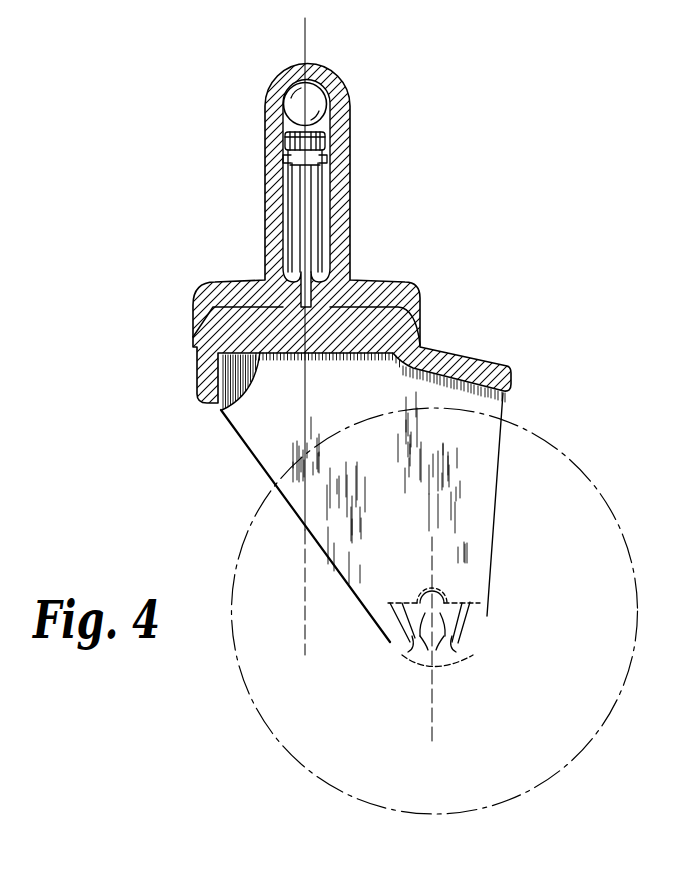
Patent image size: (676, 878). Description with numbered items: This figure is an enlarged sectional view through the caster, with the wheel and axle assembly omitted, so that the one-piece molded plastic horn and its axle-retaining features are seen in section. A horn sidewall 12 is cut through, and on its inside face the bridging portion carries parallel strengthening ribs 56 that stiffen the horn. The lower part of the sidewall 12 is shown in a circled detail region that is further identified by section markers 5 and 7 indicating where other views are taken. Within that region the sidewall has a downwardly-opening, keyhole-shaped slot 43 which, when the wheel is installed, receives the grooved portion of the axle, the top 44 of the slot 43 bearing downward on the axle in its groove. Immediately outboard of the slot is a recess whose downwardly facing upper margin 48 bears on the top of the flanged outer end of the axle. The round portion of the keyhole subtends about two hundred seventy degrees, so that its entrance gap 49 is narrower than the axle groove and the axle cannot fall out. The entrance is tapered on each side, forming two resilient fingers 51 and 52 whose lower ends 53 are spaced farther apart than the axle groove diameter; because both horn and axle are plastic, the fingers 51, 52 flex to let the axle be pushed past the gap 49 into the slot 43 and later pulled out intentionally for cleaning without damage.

The section line 5- 5 is at (522, 743).
The section line 7- 7 is at (348, 655).
The horn sidewall 12 is at (492, 408).
The keyhole-shaped slot 43 is at (420, 664).
The top of the slot 44 is at (420, 606).
The upper margin of recess 48 is at (444, 614).
The gap 49 is at (437, 643).
The finger 51 is at (453, 637).
The finger 52 is at (413, 643).
The lower ends of the fingers 53 is at (425, 648).
The strengthening ribs 56 is at (222, 412).